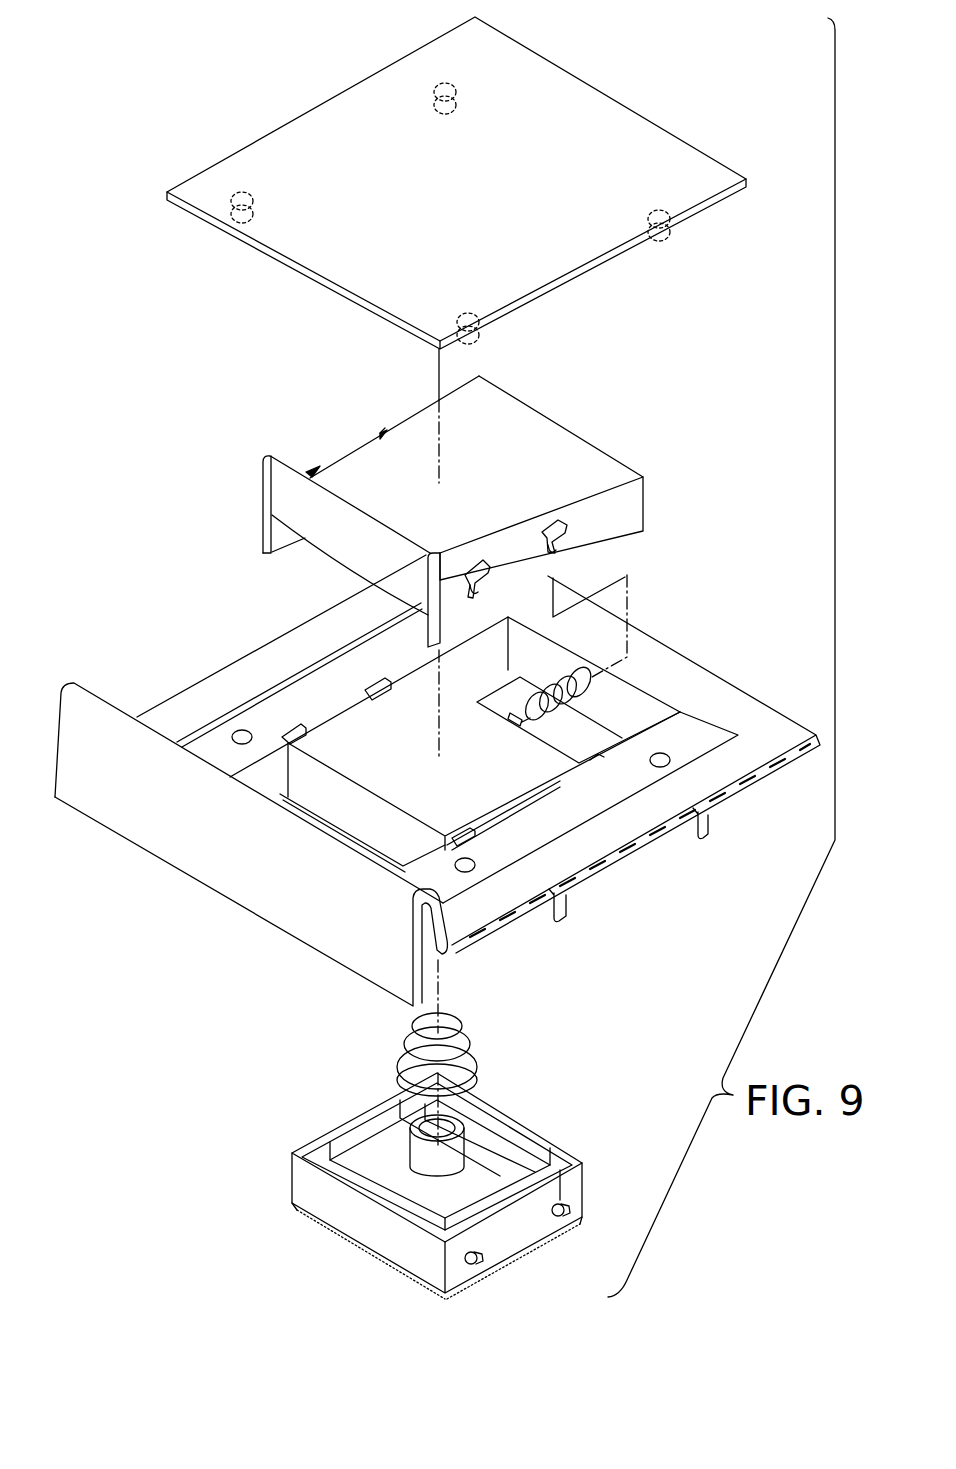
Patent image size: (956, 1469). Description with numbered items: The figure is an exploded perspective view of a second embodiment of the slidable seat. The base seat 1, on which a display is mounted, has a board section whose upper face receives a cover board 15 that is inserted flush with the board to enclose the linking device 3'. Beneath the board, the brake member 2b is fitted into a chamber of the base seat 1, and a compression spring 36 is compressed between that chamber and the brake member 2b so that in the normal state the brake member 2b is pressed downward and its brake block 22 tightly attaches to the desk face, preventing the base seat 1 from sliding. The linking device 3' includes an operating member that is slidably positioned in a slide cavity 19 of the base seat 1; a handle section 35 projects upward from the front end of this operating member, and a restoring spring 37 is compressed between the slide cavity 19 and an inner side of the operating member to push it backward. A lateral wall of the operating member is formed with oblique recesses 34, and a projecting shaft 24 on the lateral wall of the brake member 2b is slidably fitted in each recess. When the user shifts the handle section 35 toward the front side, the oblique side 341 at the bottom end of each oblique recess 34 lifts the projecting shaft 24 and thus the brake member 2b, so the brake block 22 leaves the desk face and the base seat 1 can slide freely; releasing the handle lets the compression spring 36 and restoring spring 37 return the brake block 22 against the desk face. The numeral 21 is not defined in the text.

The cover board 15 is at (301, 248).
The linking device 3' is at (476, 500).
The oblique recess 34 is at (310, 472).
The oblique side 341 is at (563, 547).
The handle section 35 is at (277, 457).
The base seat 1 is at (126, 716).
The restoring spring 37 is at (588, 688).
The slide cavity 19 is at (593, 757).
The compression spring 36 is at (470, 1047).
The brake member 2b is at (301, 1148).
The housing wall 21 is at (550, 1143).
The brake block 22 is at (340, 1233).
The projecting shaft 24 is at (576, 1206).